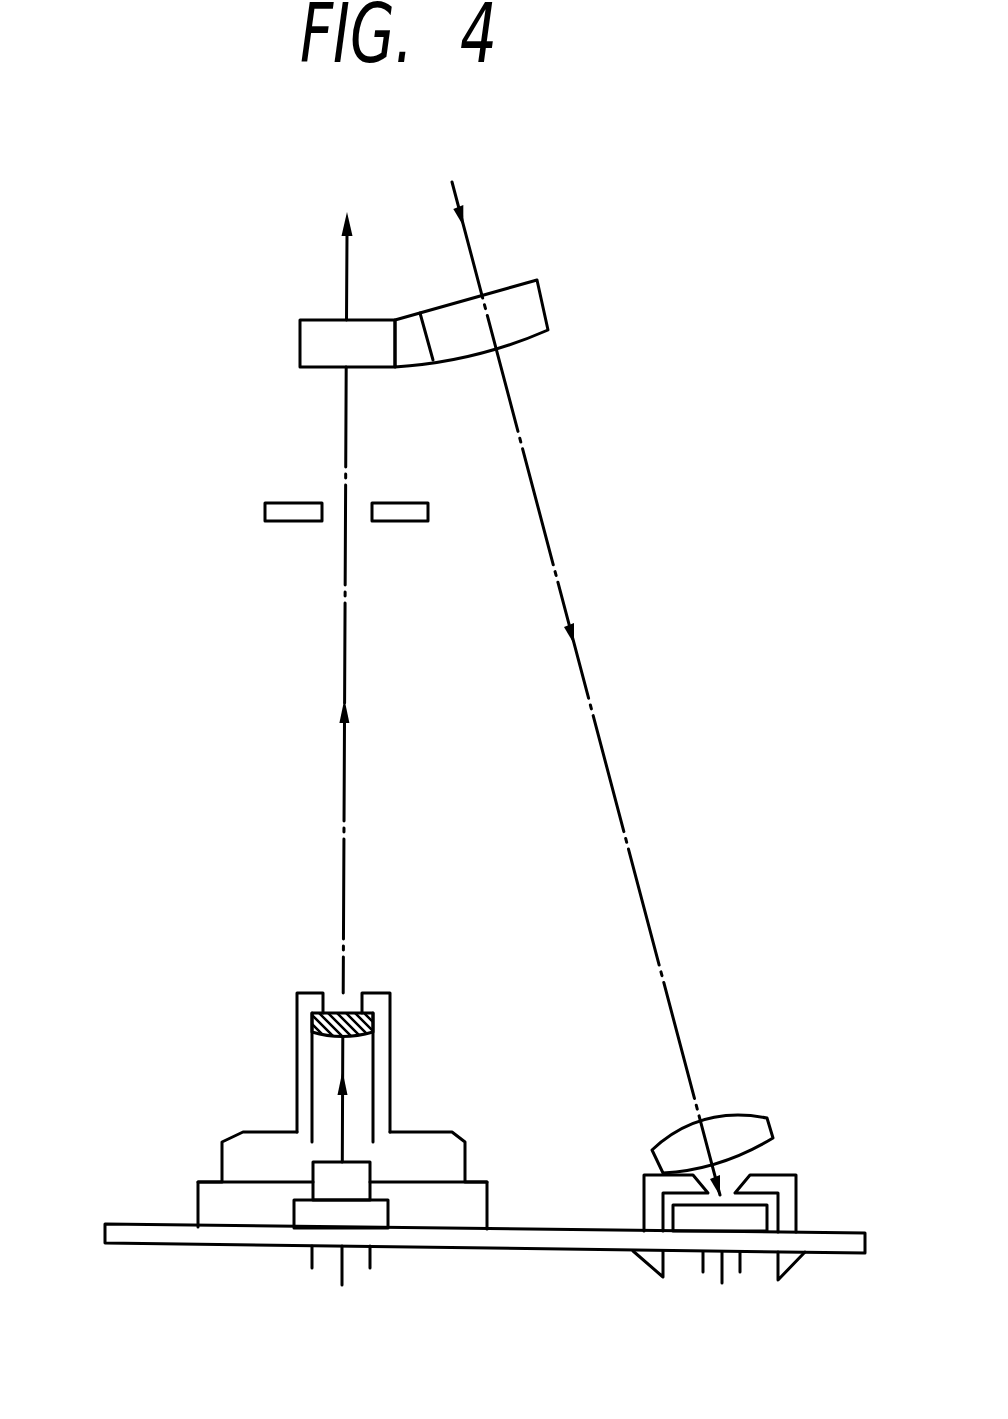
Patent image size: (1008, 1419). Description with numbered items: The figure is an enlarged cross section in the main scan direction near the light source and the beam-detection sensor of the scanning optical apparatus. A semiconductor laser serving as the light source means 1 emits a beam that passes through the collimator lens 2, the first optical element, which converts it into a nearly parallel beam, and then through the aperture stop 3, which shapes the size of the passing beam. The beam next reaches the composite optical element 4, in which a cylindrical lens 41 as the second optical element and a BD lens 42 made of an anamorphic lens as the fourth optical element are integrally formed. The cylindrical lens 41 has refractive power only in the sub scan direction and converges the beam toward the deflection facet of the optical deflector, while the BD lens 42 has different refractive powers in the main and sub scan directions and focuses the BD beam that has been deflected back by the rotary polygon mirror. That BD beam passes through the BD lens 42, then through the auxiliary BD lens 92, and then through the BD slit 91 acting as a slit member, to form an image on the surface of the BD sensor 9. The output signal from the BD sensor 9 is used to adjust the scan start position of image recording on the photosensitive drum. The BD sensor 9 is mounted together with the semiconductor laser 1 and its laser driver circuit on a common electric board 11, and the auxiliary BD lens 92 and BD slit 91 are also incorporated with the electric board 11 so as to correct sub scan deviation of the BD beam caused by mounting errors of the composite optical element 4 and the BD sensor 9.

The light source means 1 is at (327, 1187).
The collimator lens 2 is at (312, 1025).
The aperture stop 3 is at (385, 522).
The composite optical element 4 is at (170, 260).
The cylindrical lens 41 is at (307, 338).
The BD lens 42 is at (533, 310).
The BD sensor 9 is at (697, 1220).
The BD slit 91 is at (790, 1190).
The auxiliary BD lens 92 is at (760, 1135).
The electric board 11 is at (139, 1240).